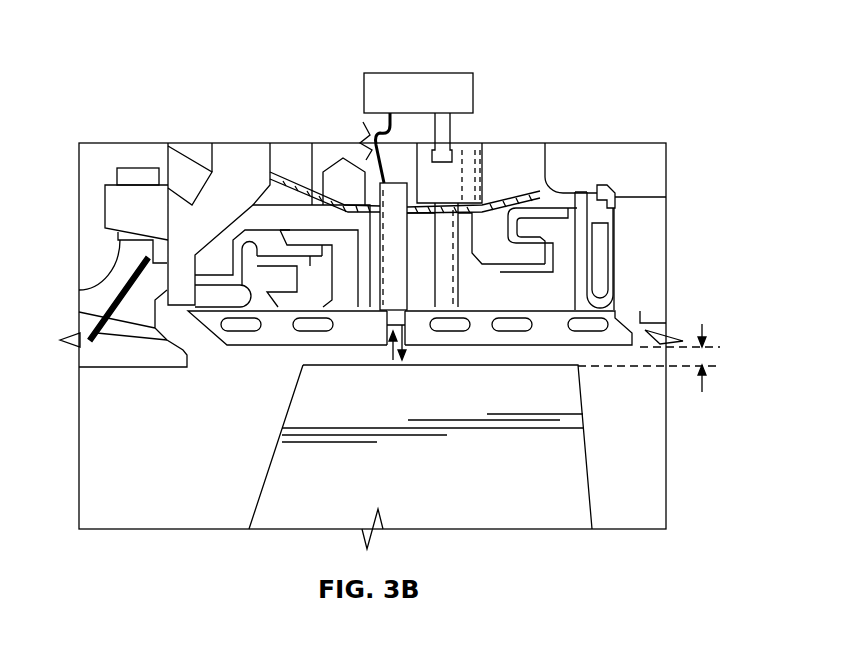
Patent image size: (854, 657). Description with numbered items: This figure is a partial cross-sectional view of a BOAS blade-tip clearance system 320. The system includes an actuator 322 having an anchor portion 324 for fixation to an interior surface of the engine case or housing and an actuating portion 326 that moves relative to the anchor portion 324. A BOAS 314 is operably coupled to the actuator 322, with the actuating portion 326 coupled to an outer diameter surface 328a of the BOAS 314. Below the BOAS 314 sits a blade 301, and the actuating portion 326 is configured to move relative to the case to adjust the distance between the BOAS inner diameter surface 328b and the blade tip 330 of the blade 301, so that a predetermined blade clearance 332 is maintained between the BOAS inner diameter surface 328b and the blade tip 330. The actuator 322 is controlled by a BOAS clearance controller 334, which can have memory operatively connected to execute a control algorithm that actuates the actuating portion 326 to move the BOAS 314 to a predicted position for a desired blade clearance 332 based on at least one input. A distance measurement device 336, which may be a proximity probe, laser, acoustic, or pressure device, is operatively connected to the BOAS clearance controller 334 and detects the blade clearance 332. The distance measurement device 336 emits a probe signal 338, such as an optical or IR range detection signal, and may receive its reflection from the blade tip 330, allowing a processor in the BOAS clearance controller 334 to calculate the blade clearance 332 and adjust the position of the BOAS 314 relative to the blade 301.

The blade 301 is at (277, 463).
The BOAS 314 is at (223, 338).
The BOAS blade-tip clearance system 320 is at (118, 30).
The actuator 322 is at (549, 86).
The anchor portion 324 is at (467, 176).
The actuating portion 326 is at (450, 266).
The outer diameter surface 328a is at (553, 300).
The BOAS inner diameter surface 328b is at (275, 350).
The blade tip 330 is at (343, 363).
The blade clearance 332 is at (702, 326).
The BOAS clearance controller 334 is at (439, 105).
The distance measurement device 336 is at (372, 173).
The probe signal 338 is at (412, 355).